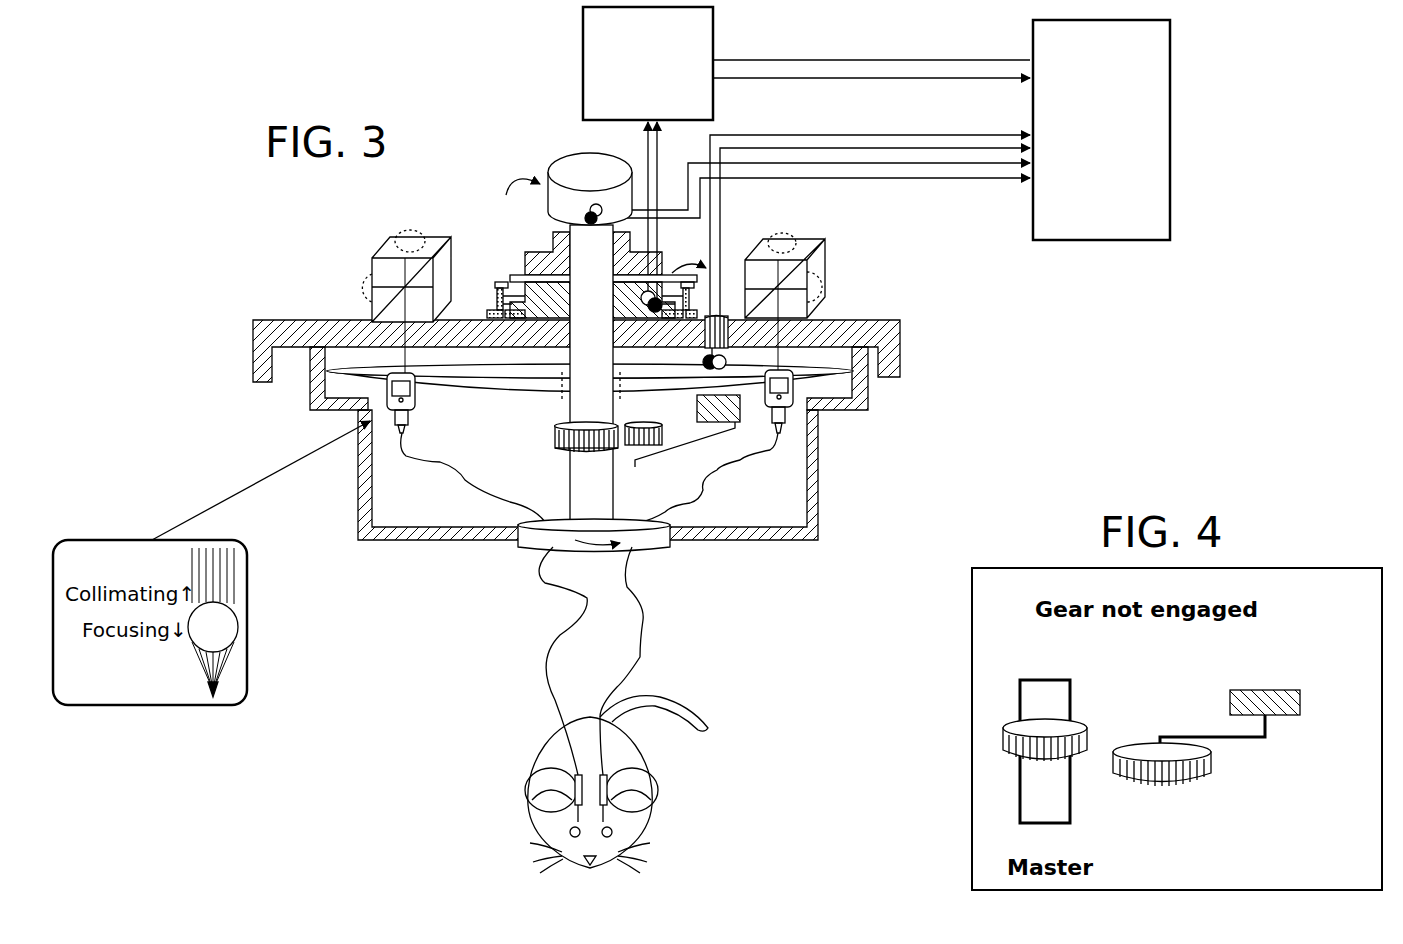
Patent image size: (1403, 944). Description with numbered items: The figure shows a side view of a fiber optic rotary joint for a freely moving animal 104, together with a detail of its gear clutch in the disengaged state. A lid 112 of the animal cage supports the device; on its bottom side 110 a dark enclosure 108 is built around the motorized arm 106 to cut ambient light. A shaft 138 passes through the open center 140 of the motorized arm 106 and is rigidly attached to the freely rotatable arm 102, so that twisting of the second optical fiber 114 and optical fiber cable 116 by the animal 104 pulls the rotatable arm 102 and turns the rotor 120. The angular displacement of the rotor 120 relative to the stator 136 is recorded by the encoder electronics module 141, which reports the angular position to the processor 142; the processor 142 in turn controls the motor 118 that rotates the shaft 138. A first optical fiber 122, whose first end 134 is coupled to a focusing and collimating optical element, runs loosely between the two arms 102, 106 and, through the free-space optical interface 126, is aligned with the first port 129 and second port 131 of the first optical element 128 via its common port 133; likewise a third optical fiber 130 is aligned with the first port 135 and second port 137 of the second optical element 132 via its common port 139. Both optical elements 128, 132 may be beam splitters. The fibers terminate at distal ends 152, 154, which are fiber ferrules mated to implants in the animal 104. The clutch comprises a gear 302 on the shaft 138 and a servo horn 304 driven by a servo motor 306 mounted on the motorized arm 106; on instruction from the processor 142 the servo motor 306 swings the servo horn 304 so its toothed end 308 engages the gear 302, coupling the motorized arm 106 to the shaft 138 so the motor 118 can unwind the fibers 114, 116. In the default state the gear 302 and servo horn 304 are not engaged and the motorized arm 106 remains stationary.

In FIG. 3, the freely rotatable arm 102 is at (522, 546).
In FIG. 3, the animal 104 is at (590, 870).
In FIG. 3, the motorized arm 106 is at (325, 385).
In FIG. 3, the dark enclosure 108 is at (358, 502).
In FIG. 3, the bottom side 110 is at (333, 359).
In FIG. 3, the lid 112 is at (253, 337).
In FIG. 3, the second optical fiber 114 is at (543, 670).
In FIG. 3, the optical fiber cable 116 is at (645, 652).
In FIG. 3, the motor 118 is at (568, 154).
In FIG. 3, the rotor 120 is at (540, 252).
In FIG. 3, the first optical fiber 122 is at (440, 463).
In FIG. 3, the free-space optical interface 126 is at (418, 337).
In FIG. 3, the first optical element 128 is at (383, 250).
In FIG. 3, the first port 129 is at (353, 290).
In FIG. 3, the third optical fiber 130 is at (703, 490).
In FIG. 3, the second port 131 is at (412, 232).
In FIG. 3, the second optical element 132 is at (808, 263).
In FIG. 3, the common port 133 is at (388, 326).
In FIG. 3, the first end 134 is at (407, 438).
In FIG. 3, the first port 135 is at (824, 290).
In FIG. 3, the stator 136 is at (527, 282).
In FIG. 3, the second port 137 is at (783, 234).
In FIG. 3, the shaft 138 is at (560, 384).
In FIG. 3, the common port 139 is at (765, 325).
In FIG. 3, the open center 140 is at (620, 393).
In FIG. 3, the encoder electronics module 141 is at (806, 154).
In FIG. 3, the processor 142 is at (883, 167).
In FIG. 3, the distal end 152 is at (557, 808).
In FIG. 3, the distal end 154 is at (628, 825).
In FIG. 3, the gear 302 is at (556, 446).
In FIG. 4, the gear 302 is at (1002, 740).
In FIG. 3, the servo horn 304 is at (683, 456).
In FIG. 4, the servo horn 304 is at (1213, 783).
In FIG. 3, the servo motor 306 is at (740, 413).
In FIG. 4, the servo motor 306 is at (1230, 706).
In FIG. 4, the toothed end 308 is at (1112, 765).